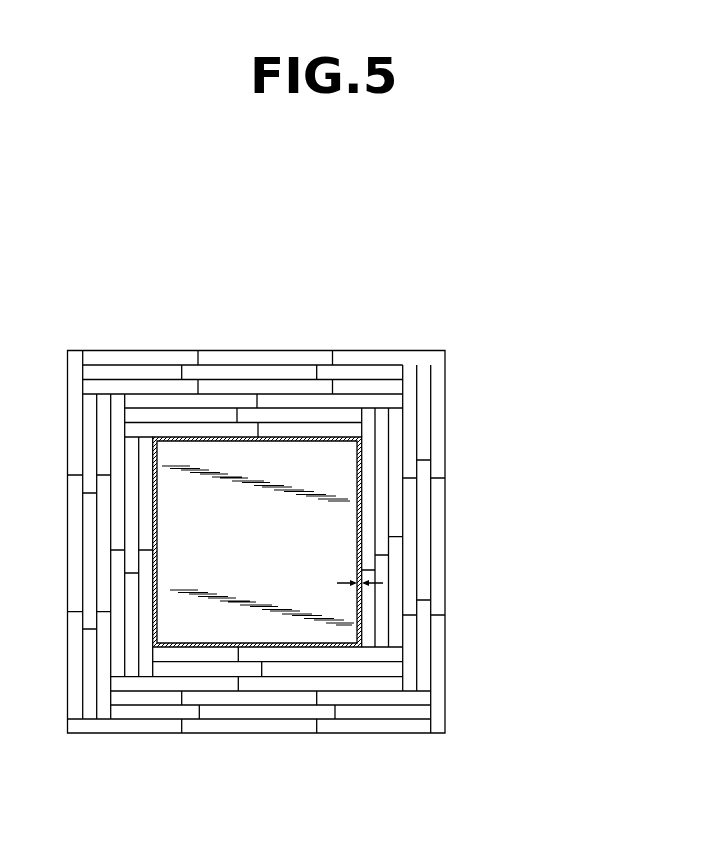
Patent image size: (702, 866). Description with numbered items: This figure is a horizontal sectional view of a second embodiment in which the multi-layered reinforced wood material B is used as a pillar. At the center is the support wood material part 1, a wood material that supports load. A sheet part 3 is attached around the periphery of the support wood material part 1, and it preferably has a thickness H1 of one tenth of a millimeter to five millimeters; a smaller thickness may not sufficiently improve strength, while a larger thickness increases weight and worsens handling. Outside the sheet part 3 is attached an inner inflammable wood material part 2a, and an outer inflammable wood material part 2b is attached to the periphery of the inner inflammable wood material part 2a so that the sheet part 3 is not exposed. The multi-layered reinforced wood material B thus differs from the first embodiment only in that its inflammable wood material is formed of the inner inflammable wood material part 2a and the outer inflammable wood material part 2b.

The multi-layered reinforced wood material B is at (461, 346).
The support wood material part 1 is at (269, 560).
The inner inflammable wood material part 2a is at (304, 408).
The outer inflammable wood material part 2b is at (410, 400).
The sheet part 3 is at (173, 437).
The thickness H1 is at (345, 583).